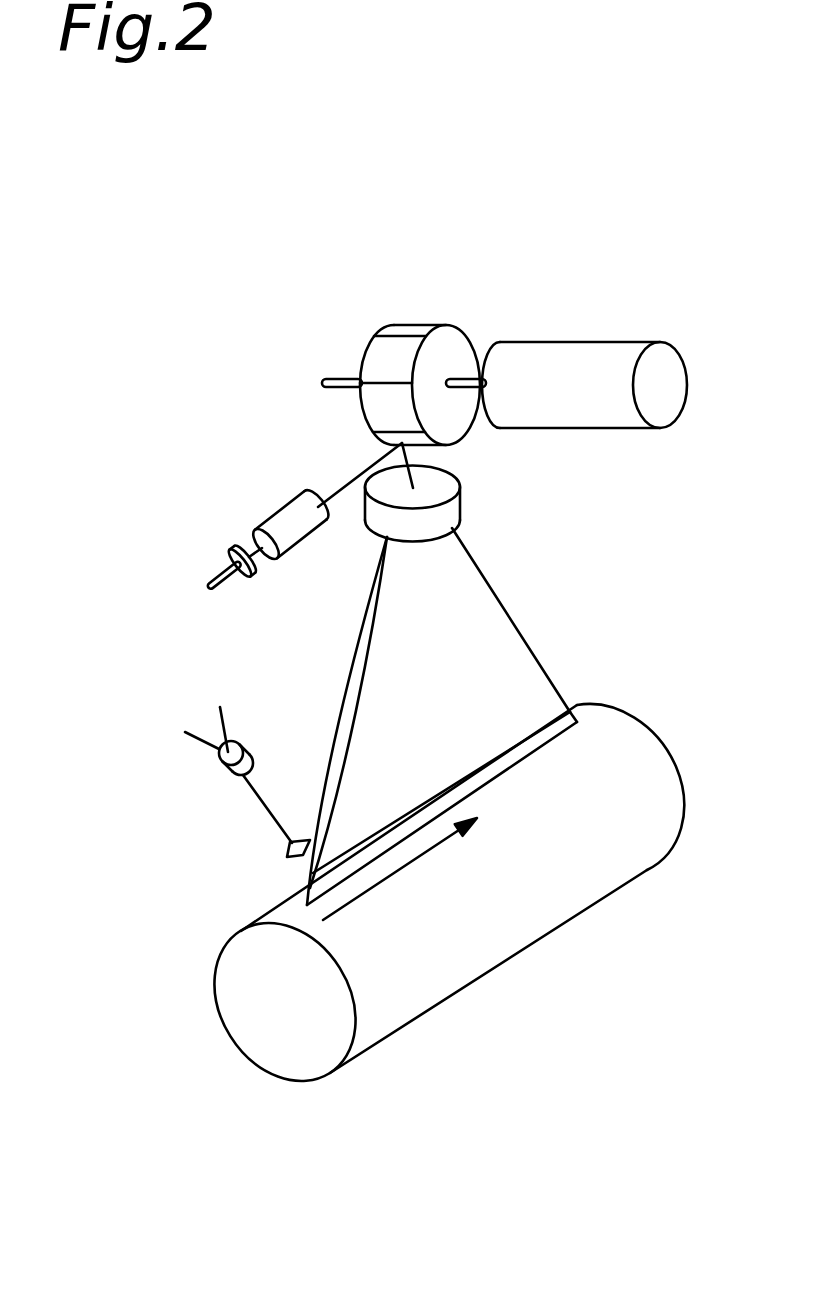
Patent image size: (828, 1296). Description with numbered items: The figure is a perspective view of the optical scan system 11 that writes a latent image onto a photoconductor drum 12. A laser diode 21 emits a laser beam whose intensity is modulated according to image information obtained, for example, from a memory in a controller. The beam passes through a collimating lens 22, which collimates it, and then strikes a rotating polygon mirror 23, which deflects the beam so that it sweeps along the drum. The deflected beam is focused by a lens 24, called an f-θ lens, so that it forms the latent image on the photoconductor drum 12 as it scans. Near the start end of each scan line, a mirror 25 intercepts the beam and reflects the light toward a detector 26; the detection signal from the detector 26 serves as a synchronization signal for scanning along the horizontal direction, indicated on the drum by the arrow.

The optical scan system 11 is at (262, 302).
The photoconductor drum 12 is at (648, 730).
The laser diode 21 is at (227, 548).
The collimating lens 22 is at (283, 507).
The rotating polygon mirror 23 is at (416, 325).
The f-θ lens 24 is at (463, 502).
The mirror 25 is at (288, 853).
The detector 26 is at (220, 773).